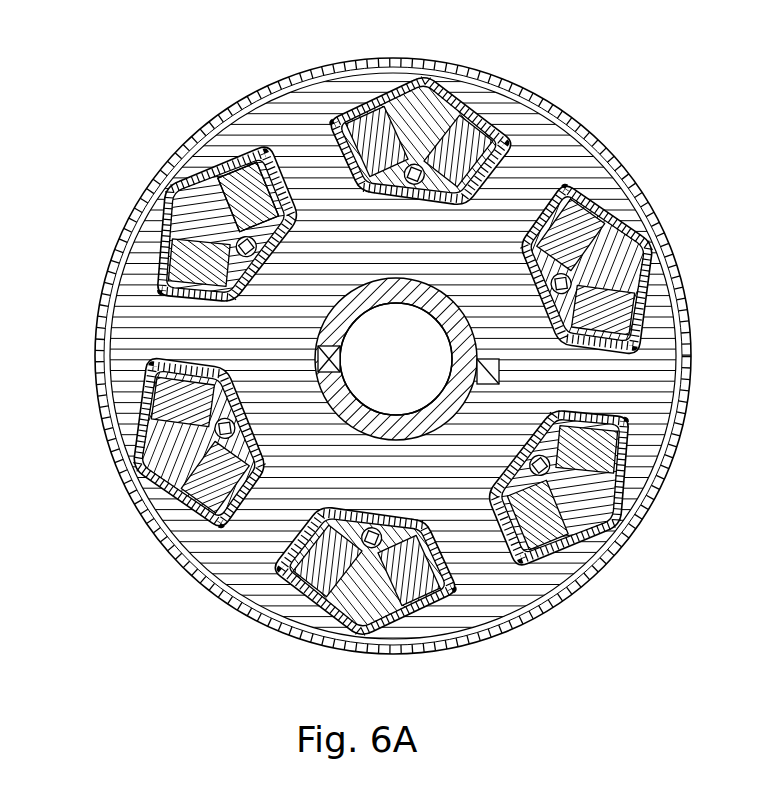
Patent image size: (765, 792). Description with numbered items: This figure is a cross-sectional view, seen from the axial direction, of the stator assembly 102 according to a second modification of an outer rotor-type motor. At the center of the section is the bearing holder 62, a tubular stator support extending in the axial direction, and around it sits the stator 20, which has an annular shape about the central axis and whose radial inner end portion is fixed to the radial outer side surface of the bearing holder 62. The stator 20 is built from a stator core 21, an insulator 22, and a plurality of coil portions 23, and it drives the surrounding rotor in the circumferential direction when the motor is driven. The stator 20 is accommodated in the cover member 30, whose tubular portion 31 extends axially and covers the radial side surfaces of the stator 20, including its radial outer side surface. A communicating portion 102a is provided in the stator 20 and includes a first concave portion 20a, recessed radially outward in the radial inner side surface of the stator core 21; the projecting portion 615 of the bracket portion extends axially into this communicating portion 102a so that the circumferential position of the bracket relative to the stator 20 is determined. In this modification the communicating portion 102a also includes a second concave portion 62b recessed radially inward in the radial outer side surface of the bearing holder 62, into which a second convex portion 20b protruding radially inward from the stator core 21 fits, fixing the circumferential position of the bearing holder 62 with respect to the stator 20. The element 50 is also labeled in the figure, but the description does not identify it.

The stator assembly 102 is at (393, 356).
The communicating portion 102a is at (383, 452).
The stator 20 is at (393, 356).
The first concave portion 20a is at (483, 392).
The second convex portion 20b is at (343, 342).
The stator core 21 is at (297, 137).
The insulator 22 is at (223, 155).
The coil portions 23 is at (253, 203).
The cover member 30 is at (370, 356).
The tubular portion 31 is at (150, 530).
The magnet holding pocket 50 is at (173, 445).
The bearing holder 62 is at (308, 375).
The second concave portion 62b is at (343, 360).
The projecting portion 615 is at (482, 360).